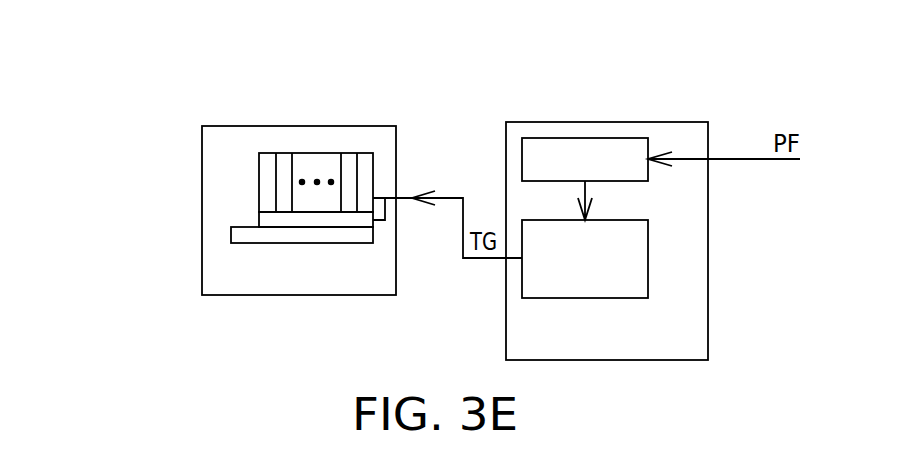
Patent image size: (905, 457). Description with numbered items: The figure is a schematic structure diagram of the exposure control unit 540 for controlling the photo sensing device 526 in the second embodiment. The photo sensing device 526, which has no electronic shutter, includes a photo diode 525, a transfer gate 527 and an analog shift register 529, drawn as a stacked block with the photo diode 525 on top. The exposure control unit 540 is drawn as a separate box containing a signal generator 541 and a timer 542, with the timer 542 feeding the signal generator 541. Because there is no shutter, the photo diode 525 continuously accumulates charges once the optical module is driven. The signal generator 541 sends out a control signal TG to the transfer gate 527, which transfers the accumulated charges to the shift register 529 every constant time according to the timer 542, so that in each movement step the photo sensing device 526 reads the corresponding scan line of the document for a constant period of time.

The photo diode 525 is at (373, 160).
The photo sensing device 526 is at (295, 295).
The transfer gate 527 is at (260, 220).
The analog shift register 529 is at (373, 236).
The exposure control unit 540 is at (708, 215).
The signal generator 541 is at (648, 262).
The timer 542 is at (586, 138).